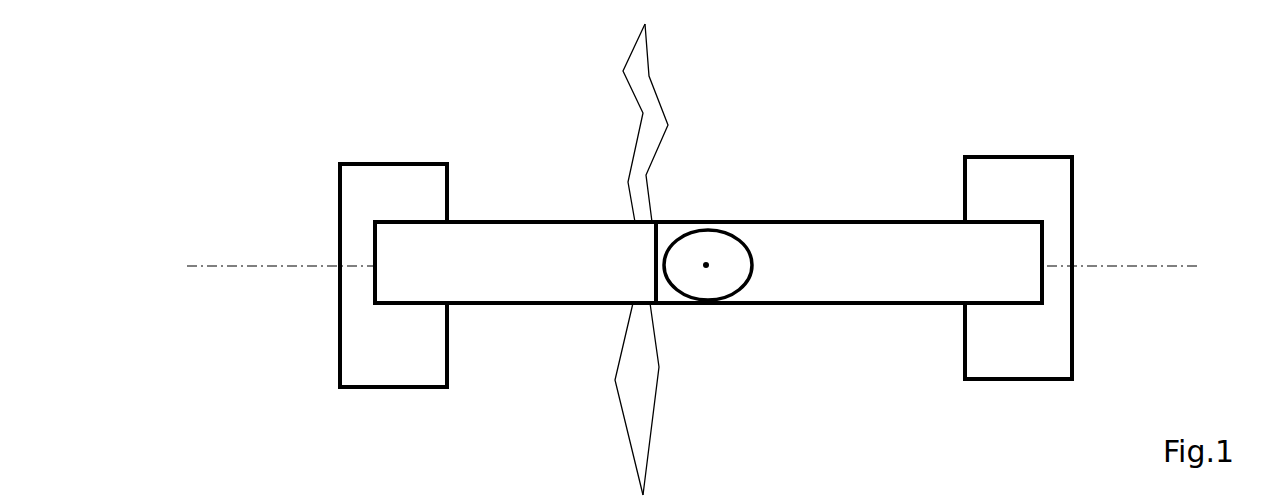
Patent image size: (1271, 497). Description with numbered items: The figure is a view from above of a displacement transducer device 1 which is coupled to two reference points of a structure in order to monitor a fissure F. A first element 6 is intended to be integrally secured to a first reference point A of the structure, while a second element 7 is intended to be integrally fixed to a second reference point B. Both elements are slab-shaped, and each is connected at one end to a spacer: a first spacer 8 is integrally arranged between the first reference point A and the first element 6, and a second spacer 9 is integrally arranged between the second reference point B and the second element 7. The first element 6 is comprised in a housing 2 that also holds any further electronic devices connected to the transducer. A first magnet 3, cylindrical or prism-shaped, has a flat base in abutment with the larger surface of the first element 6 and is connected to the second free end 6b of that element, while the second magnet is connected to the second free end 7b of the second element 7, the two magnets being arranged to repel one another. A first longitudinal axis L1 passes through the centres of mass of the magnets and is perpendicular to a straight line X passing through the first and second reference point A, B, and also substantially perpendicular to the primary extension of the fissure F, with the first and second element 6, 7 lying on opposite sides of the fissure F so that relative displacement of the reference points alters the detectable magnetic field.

The displacement transducer device 1 is at (1102, 113).
The housing 2 is at (1074, 225).
The first magnet 3 is at (750, 254).
The first element 6 is at (1020, 307).
The second free end of the first element 6b is at (977, 257).
The second element 7 is at (415, 221).
The second free end of the second element 7b is at (402, 283).
The first spacer 8 is at (1053, 183).
The second spacer 9 is at (357, 195).
The first reference point A is at (1020, 380).
The second reference point B is at (382, 387).
The fissure F is at (657, 145).
The first longitudinal axis L1 is at (707, 265).
The straight line X is at (217, 268).